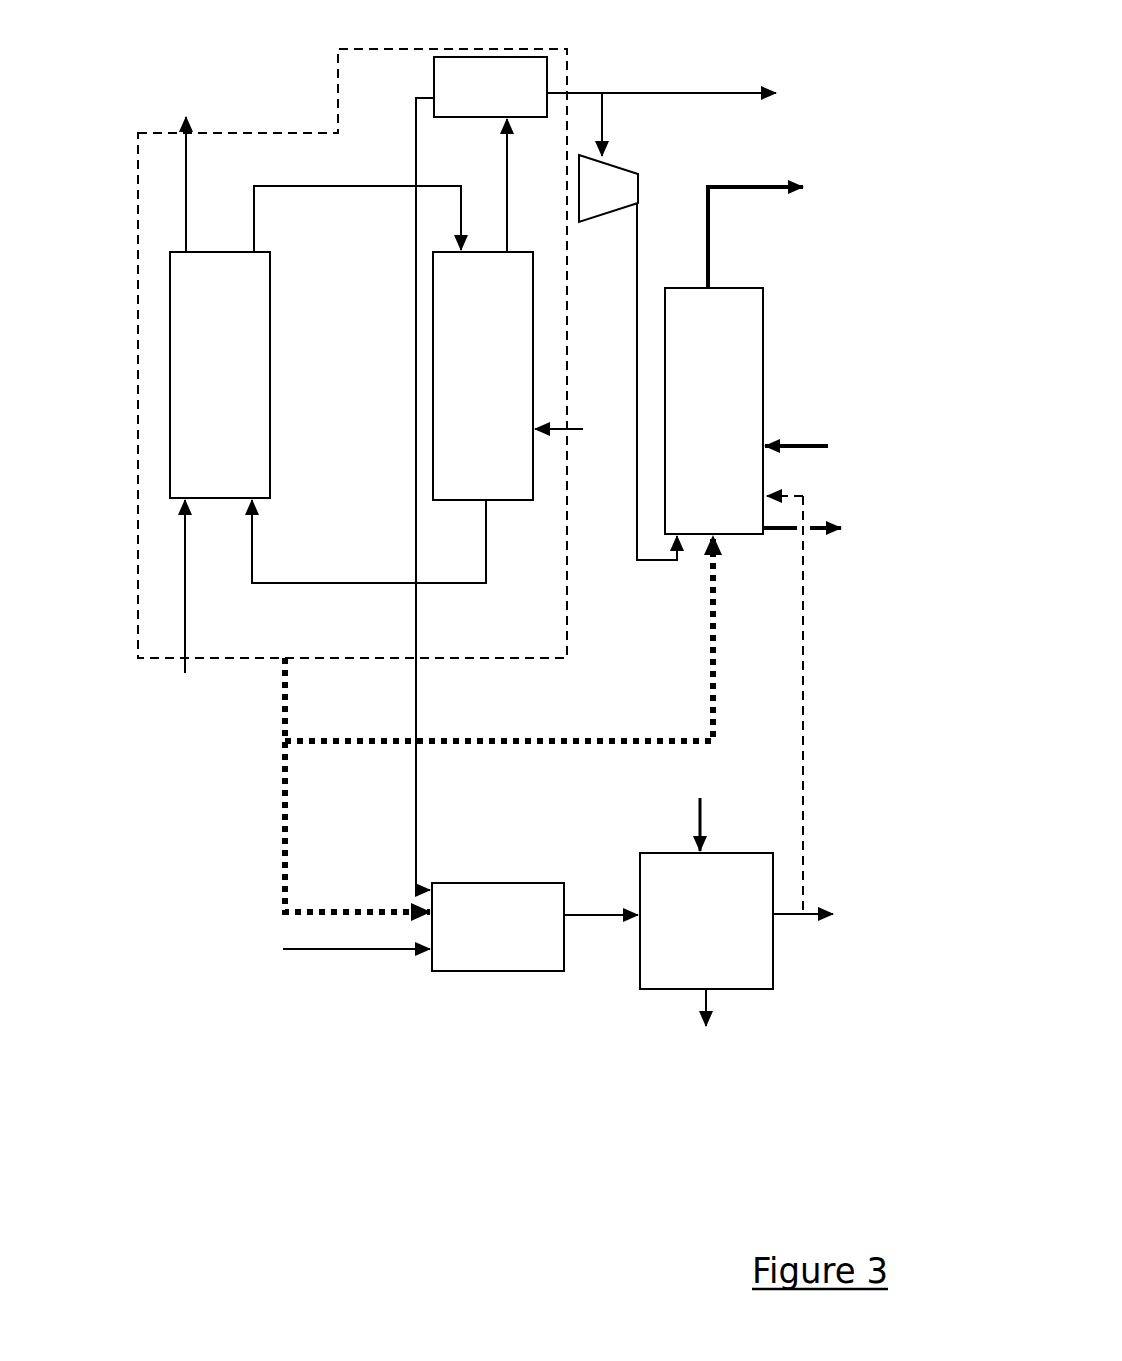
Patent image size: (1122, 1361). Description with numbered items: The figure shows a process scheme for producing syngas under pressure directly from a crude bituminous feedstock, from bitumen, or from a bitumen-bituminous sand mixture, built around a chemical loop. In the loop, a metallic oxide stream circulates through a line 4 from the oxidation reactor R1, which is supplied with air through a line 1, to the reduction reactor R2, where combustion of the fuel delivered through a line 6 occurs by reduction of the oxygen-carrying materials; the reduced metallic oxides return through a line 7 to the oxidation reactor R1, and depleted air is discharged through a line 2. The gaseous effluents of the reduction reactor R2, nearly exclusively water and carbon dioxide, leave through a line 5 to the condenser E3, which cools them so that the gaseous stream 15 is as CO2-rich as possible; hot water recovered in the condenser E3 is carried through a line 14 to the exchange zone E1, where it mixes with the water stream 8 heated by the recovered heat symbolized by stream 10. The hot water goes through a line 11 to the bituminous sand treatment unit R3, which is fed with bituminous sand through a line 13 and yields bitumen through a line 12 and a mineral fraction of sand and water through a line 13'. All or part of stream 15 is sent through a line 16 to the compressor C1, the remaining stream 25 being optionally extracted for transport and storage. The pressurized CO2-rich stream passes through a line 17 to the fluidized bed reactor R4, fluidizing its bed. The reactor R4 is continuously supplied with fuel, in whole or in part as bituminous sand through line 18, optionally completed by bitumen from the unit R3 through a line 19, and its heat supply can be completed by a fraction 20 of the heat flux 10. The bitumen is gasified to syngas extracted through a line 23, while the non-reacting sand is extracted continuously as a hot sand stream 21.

The air line 1 is at (186, 600).
The depleted air line 2 is at (187, 183).
The metallic oxide line 4 is at (327, 187).
The gaseous effluent line 5 is at (508, 165).
The fuel line 6 is at (540, 440).
The reduced metallic oxide line 7 is at (375, 577).
The water stream 8 is at (360, 949).
The heat flux stream 10 is at (286, 848).
The hot water line 11 is at (587, 914).
The bitumen line 12 is at (810, 914).
The bituminous sand line 13 is at (730, 816).
The mineral fraction line 13' is at (732, 1022).
The condenser hot water line 14 is at (413, 320).
The CO2-rich gaseous stream 15 is at (577, 92).
The compressor feed line 16 is at (602, 135).
The pressurized CO2 line 17 is at (636, 341).
The bituminous sand supply line 18 is at (800, 446).
The bitumen supply line 19 is at (804, 690).
The heat flux fraction 20 is at (540, 741).
The hot sand stream 21 is at (812, 528).
The syngas line 23 is at (708, 245).
The remaining CO2 stream 25 is at (658, 93).
The compressor C1 is at (602, 190).
The oxidation reactor R1 is at (220, 375).
The reduction reactor R2 is at (483, 376).
The bituminous sand treatment unit R3 is at (706, 921).
The fluidized bed reactor R4 is at (714, 411).
The exchange zone E1 is at (498, 927).
The condenser E3 is at (490, 87).